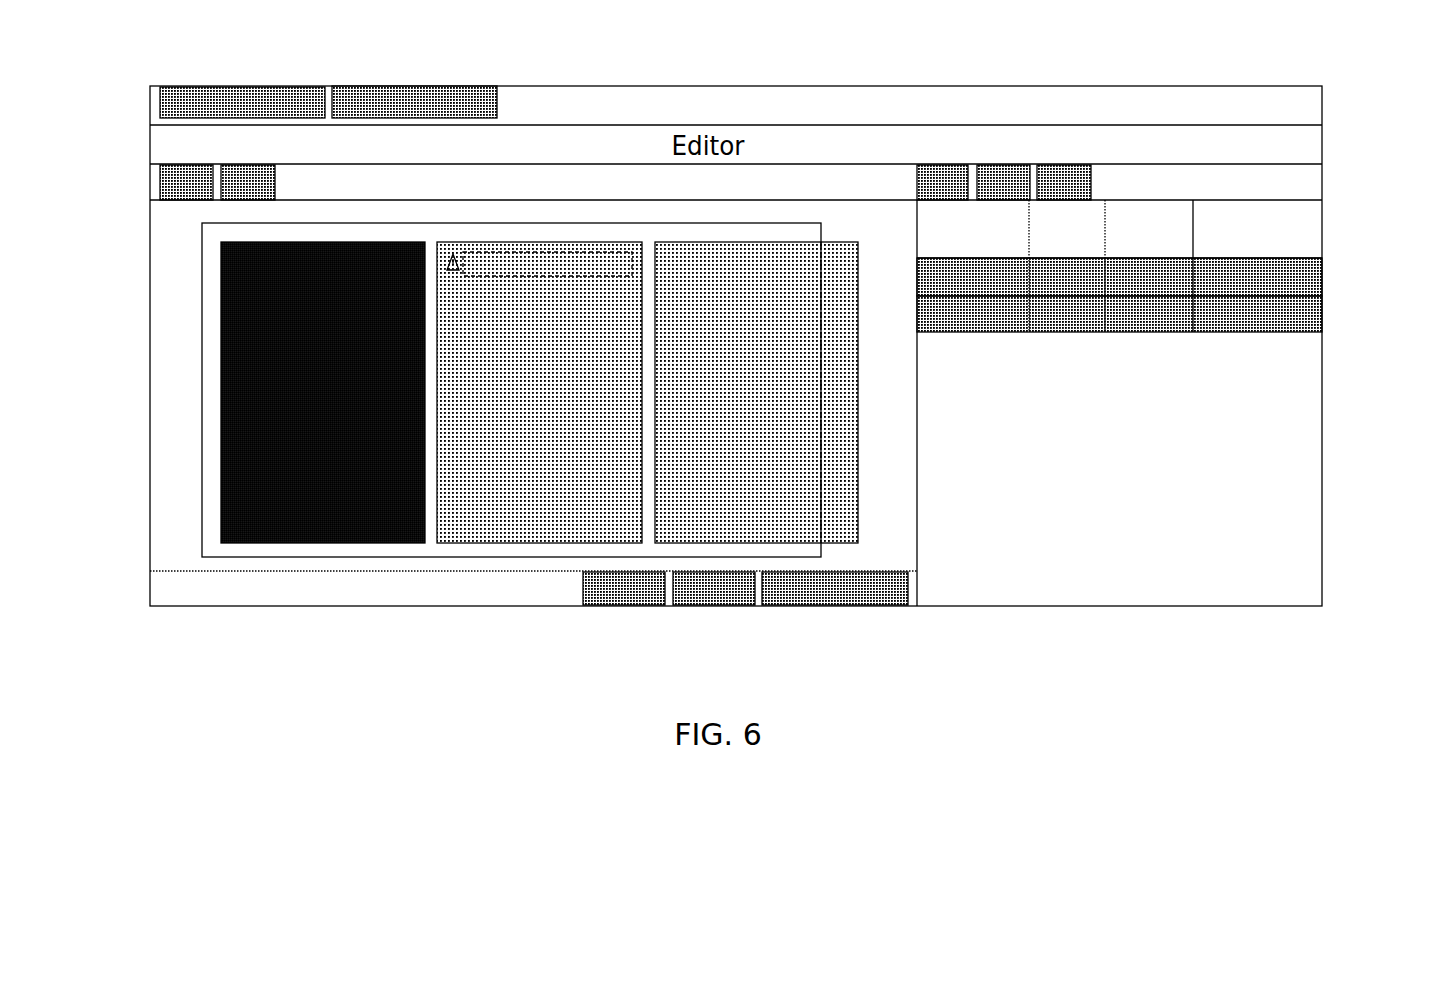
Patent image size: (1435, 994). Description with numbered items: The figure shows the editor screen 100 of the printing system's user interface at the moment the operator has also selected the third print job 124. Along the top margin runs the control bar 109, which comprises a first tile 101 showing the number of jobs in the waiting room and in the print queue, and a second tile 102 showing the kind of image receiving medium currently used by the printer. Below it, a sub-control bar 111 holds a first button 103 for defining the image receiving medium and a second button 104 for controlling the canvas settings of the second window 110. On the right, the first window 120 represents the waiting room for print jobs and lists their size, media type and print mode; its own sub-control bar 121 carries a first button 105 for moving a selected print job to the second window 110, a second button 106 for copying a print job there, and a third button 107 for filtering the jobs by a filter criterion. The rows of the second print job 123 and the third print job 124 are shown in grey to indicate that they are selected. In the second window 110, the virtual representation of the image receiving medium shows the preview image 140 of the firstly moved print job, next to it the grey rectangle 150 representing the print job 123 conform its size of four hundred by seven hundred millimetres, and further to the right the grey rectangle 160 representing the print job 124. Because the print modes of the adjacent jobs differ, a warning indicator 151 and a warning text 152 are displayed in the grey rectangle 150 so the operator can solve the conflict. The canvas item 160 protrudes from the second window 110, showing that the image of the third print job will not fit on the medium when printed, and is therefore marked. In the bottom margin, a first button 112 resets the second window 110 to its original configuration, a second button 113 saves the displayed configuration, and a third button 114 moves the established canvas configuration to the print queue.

The editor screen 100 is at (143, 632).
The first tile 101 is at (210, 85).
The second tile 102 is at (443, 85).
The first button 103 is at (192, 163).
The second button 104 is at (239, 165).
The first button 105 is at (947, 162).
The second button 106 is at (1010, 162).
The third button 107 is at (1068, 165).
The control bar 109 is at (1322, 100).
The second window 110 is at (527, 560).
The sub-control bar 111 is at (150, 186).
The first button 112 is at (632, 606).
The second button 113 is at (710, 606).
The third button 114 is at (828, 606).
The first window 120 is at (1110, 583).
The sub-control bar 121 is at (1322, 183).
The print job 123 is at (1322, 279).
The print job 124 is at (1322, 324).
The preview image 140 is at (323, 542).
The grey rectangle 150 is at (463, 517).
The warning indicator 151 is at (453, 275).
The warning text 152 is at (542, 276).
The grey rectangle 160 is at (848, 380).